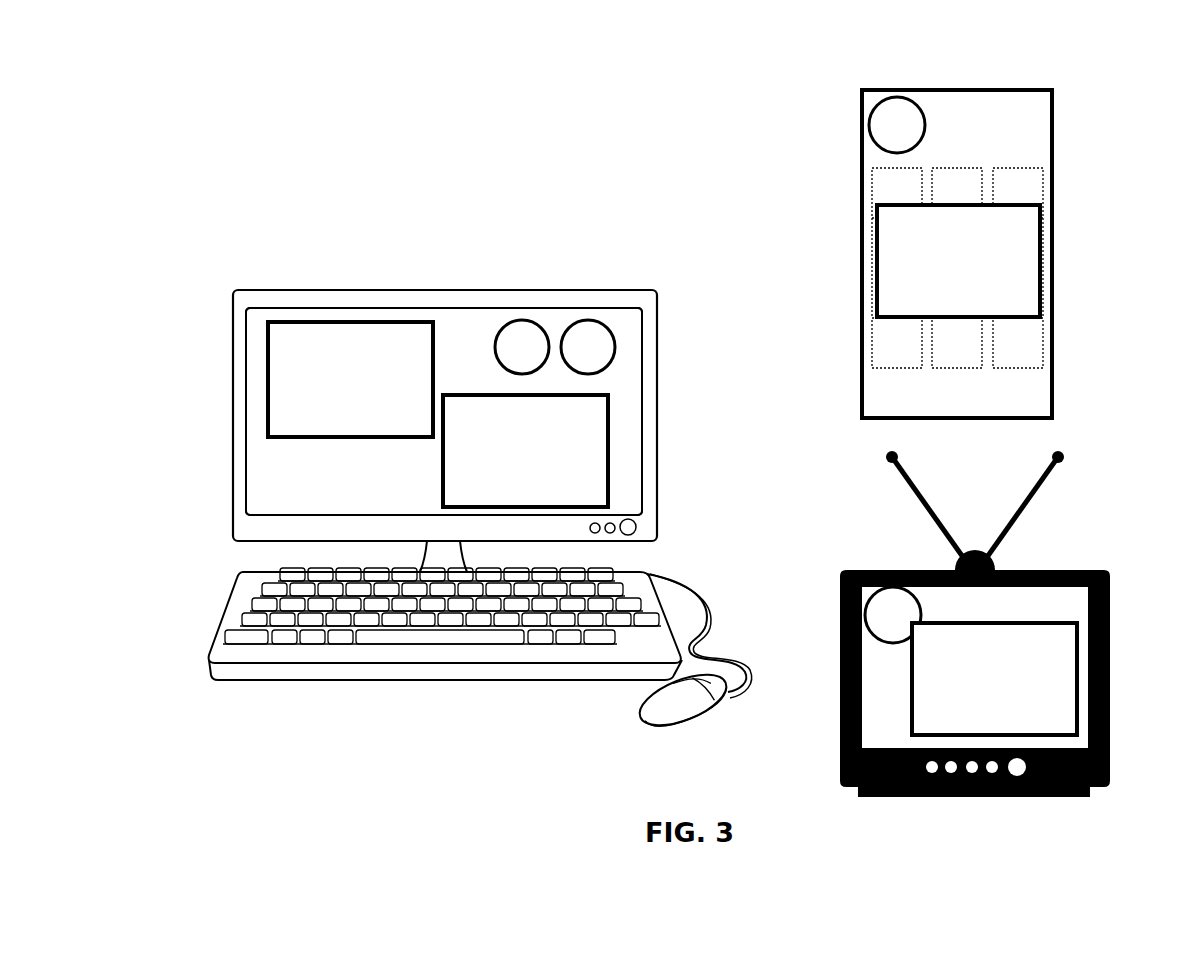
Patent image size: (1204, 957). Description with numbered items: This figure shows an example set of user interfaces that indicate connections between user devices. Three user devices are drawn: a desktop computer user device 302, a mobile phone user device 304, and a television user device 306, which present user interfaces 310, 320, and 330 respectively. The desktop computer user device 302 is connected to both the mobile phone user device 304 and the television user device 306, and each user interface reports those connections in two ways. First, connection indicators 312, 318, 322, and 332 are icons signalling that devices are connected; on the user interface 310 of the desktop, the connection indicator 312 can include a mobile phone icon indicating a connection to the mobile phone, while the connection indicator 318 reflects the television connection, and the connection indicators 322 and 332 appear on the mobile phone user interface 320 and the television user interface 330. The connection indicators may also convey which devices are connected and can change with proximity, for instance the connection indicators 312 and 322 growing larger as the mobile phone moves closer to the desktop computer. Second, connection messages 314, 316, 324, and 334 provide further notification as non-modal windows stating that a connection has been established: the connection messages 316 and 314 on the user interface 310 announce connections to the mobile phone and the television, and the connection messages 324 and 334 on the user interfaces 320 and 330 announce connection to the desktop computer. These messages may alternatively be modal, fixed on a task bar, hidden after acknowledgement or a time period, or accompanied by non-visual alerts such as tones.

The user device 302 is at (437, 290).
The user device 304 is at (950, 90).
The user device 306 is at (1010, 570).
The user interface 310 is at (275, 490).
The connection indicator 312 is at (604, 352).
The connection message 314 is at (597, 445).
The connection message 316 is at (335, 337).
The connection indicator 318 is at (521, 338).
The user interface 320 is at (1030, 142).
The connection indicator 322 is at (880, 134).
The connection message 324 is at (892, 267).
The user interface 330 is at (1072, 607).
The connection indicator 332 is at (876, 628).
The connection message 334 is at (930, 700).